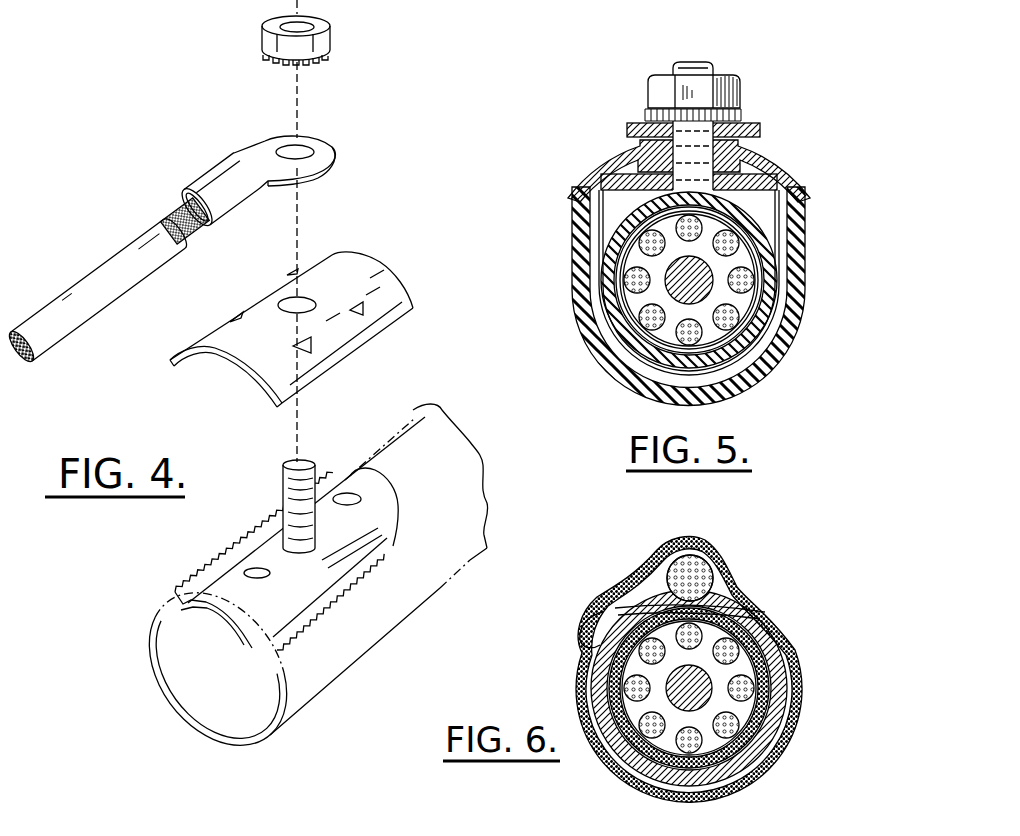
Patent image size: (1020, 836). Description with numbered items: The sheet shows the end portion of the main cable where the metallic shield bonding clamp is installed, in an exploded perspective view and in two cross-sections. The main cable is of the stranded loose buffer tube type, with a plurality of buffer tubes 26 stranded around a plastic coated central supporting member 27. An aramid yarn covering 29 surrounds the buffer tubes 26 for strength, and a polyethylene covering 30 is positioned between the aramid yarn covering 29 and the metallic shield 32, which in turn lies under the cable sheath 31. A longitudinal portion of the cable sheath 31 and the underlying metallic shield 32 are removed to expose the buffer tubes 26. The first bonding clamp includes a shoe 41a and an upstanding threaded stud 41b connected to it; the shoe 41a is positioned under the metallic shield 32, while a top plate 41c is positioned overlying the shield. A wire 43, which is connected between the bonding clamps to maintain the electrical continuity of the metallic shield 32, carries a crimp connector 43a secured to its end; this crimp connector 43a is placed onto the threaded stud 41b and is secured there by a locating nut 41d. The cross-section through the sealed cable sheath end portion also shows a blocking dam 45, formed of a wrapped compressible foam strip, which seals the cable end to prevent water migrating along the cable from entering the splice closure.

In FIG. 5, the buffer tubes 26 is at (752, 288).
In FIG. 6, the buffer tubes 26 is at (698, 638).
In FIG. 5, the central supporting member 27 is at (706, 300).
In FIG. 6, the central supporting member 27 is at (668, 685).
In FIG. 5, the aramid yarn covering 29 is at (754, 289).
In FIG. 5, the polyethylene covering 30 is at (760, 264).
In FIG. 4, the cable sheath 31 is at (331, 656).
In FIG. 5, the cable sheath 31 is at (585, 324).
In FIG. 4, the metallic shield 32 is at (192, 709).
In FIG. 5, the metallic shield 32 is at (582, 226).
In FIG. 4, the shoe 41a is at (229, 600).
In FIG. 5, the shoe 41a is at (778, 214).
In FIG. 4, the threaded stud 41b is at (303, 465).
In FIG. 5, the threaded stud 41b is at (700, 63).
In FIG. 4, the top plate 41c is at (405, 310).
In FIG. 5, the top plate 41c is at (752, 151).
In FIG. 4, the locating nut 41d is at (332, 28).
In FIG. 4, the wire 43 is at (112, 270).
In FIG. 6, the wire 43 is at (705, 576).
In FIG. 4, the crimp connector 43a is at (334, 152).
In FIG. 5, the crimp connector 43a is at (760, 125).
In FIG. 6, the blocking dam 45 is at (727, 790).